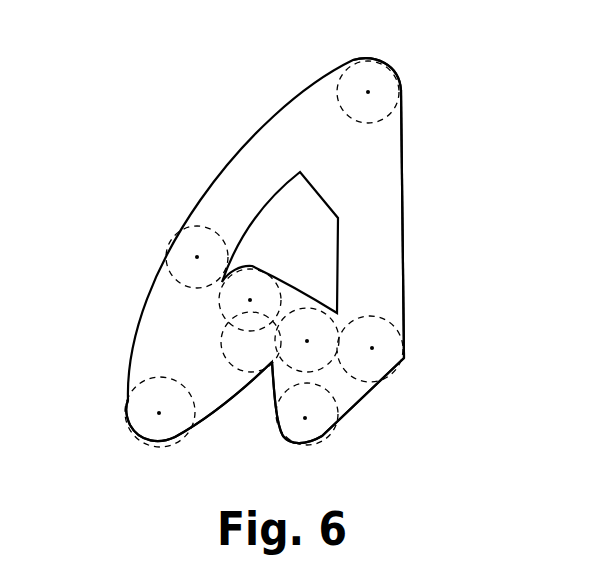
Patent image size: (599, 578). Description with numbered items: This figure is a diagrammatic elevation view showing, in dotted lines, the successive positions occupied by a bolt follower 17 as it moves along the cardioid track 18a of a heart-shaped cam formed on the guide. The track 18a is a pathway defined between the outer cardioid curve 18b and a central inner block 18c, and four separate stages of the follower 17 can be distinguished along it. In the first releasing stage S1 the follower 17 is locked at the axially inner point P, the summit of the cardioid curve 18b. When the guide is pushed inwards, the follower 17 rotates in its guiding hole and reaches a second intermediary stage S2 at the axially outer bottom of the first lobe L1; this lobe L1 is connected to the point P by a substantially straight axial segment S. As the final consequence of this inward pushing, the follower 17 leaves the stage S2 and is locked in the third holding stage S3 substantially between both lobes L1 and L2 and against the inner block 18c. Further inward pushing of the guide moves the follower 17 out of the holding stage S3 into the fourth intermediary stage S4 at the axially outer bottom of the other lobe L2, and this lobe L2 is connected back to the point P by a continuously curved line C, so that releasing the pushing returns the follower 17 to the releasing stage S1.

The continuously curved line C is at (198, 183).
The inner axial point P is at (380, 58).
The straight axial segment S is at (403, 242).
The releasing stage S1 is at (355, 120).
The second intermediary stage S2 is at (343, 422).
The holding stage S3 is at (218, 305).
The fourth intermediary stage S4 is at (142, 382).
The follower 17 is at (252, 345).
The cardioid track 18a is at (274, 166).
The outer cardioid curve 18b is at (383, 390).
The central inner block 18c is at (302, 251).
The first lobe L1 is at (287, 443).
The second lobe L2 is at (145, 440).